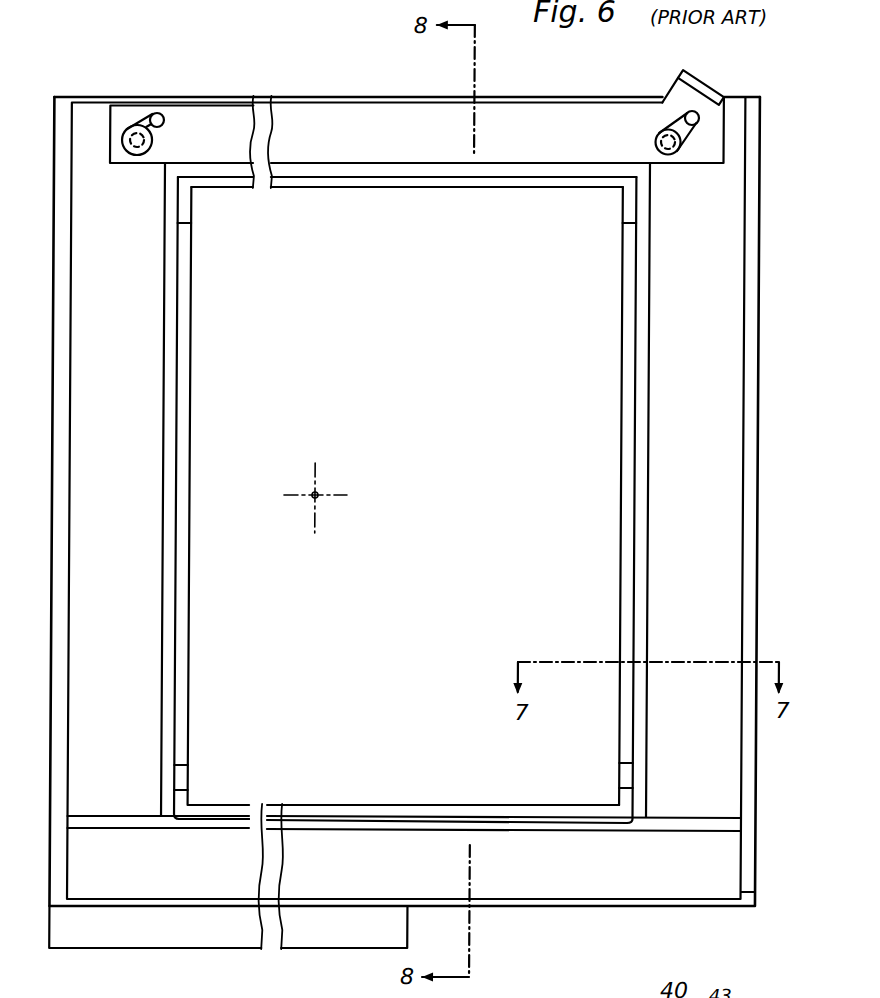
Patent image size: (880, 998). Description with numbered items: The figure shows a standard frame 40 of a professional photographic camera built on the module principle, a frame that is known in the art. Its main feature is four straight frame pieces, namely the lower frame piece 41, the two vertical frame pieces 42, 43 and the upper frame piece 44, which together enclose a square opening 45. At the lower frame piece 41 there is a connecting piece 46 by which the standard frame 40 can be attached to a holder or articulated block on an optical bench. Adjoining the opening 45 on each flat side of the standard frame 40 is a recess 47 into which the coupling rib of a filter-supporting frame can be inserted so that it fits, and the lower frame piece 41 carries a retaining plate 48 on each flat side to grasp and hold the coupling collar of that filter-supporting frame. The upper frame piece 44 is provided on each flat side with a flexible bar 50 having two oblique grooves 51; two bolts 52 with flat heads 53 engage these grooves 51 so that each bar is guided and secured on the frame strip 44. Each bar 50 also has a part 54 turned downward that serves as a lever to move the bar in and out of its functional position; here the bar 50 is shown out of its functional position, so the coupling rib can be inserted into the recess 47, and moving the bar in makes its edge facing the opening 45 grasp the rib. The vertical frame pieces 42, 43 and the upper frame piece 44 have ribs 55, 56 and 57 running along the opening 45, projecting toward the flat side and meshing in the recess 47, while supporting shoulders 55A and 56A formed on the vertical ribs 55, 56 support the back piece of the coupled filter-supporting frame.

The standard frame 40 is at (512, 95).
The lower frame piece 41 is at (664, 906).
The vertical frame piece 42 is at (157, 565).
The vertical frame piece 43 is at (658, 547).
The upper frame piece 44 is at (431, 168).
The square opening 45 is at (609, 342).
The connecting piece 46 is at (128, 943).
The recess 47 is at (168, 337).
The retaining plate 48 is at (342, 820).
The flexible bar 50 is at (289, 112).
The oblique groove 51 is at (151, 112).
The bolt 52 is at (153, 141).
The flat head 53 is at (136, 156).
The downward-turned part 54 is at (688, 80).
The rib 55 is at (186, 453).
The supporting shoulder 55A is at (187, 775).
The rib 56 is at (628, 288).
The supporting shoulder 56A is at (629, 208).
The rib 57 is at (328, 186).